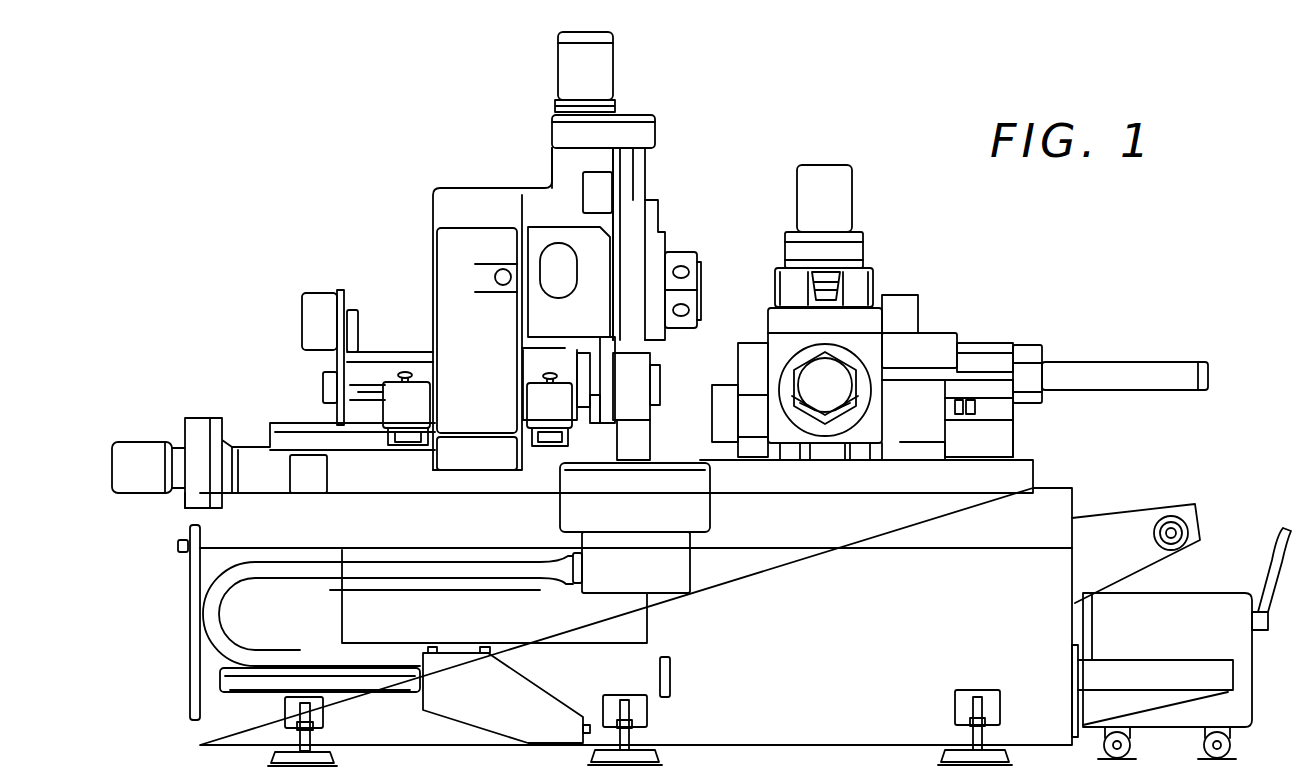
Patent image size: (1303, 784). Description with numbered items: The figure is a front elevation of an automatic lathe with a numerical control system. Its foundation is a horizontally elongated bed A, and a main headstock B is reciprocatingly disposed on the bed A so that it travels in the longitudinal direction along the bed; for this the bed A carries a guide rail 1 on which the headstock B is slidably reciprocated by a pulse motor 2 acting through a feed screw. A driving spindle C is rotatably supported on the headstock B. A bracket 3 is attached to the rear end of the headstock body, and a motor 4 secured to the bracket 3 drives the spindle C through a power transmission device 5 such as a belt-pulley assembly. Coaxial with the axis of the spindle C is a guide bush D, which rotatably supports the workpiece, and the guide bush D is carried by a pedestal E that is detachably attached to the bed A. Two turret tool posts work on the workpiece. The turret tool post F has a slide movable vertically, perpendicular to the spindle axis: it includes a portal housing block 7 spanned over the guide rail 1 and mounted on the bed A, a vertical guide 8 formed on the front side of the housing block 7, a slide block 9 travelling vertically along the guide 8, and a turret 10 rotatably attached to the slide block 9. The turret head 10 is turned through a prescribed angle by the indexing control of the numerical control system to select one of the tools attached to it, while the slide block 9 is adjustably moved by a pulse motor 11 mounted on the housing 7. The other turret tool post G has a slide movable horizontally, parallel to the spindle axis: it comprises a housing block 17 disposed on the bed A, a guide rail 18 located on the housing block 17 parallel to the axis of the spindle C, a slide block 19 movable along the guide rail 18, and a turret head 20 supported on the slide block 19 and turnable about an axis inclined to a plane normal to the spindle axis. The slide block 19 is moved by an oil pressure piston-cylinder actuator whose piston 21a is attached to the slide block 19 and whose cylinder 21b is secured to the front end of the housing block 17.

The guide rail 1 is at (296, 435).
The pulse motor 2 is at (160, 442).
The bracket 3 is at (343, 291).
The motor 4 is at (308, 336).
The power transmission device 5 is at (353, 311).
The portal housing block 7 is at (487, 195).
The vertical guide 8 is at (633, 178).
The slide block 9 is at (645, 214).
The turret 10 is at (680, 253).
The pulse motor 11 is at (592, 84).
The housing block 17 is at (1013, 437).
The guide rail 18 is at (989, 390).
The slide block 19 is at (940, 339).
The turret head 20 is at (836, 350).
The piston 21a is at (983, 372).
The cylinder 21b is at (1104, 368).
The bed A is at (995, 550).
The main headstock B is at (400, 352).
The driving spindle C is at (610, 408).
The guide bush D is at (662, 398).
The pedestal E is at (650, 442).
The turret tool post F is at (472, 309).
The turret tool post G is at (960, 312).